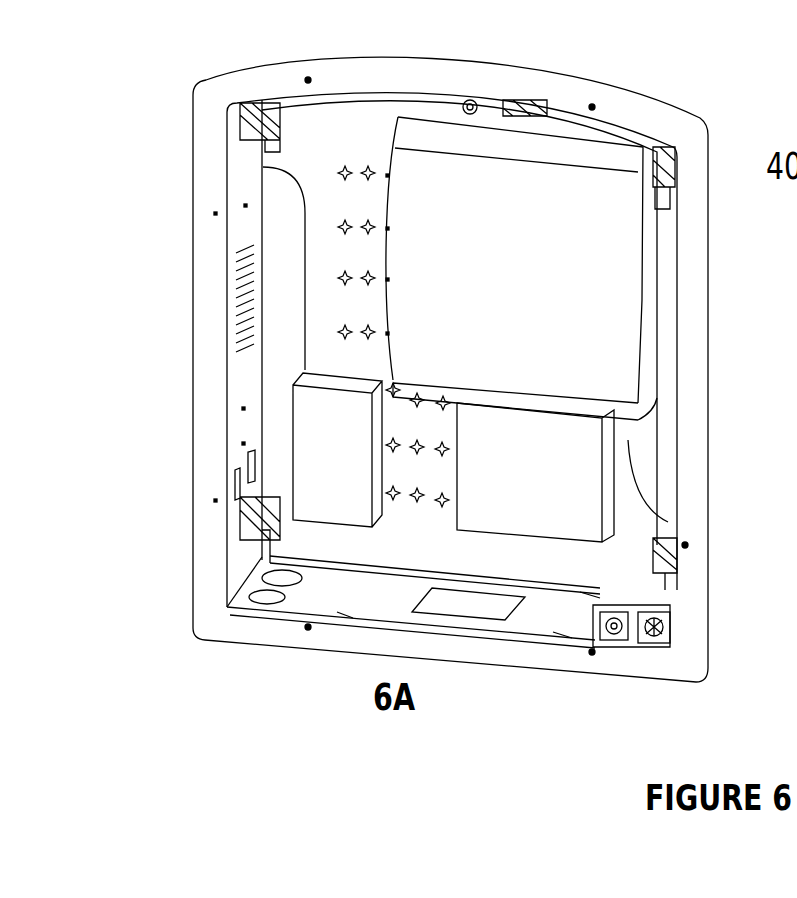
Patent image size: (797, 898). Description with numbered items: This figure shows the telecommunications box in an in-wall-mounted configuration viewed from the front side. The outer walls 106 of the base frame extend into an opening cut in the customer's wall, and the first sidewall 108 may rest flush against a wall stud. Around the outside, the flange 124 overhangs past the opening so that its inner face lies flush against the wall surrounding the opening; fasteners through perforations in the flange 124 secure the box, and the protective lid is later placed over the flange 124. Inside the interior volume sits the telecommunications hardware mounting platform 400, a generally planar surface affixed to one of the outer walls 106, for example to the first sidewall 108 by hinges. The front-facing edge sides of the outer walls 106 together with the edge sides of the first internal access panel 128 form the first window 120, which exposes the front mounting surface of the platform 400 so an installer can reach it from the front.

The outer walls 106 is at (235, 290).
The first sidewall 108 is at (237, 433).
The first window 120 is at (302, 363).
The flange 124 is at (235, 622).
The first internal access panel 128 is at (670, 613).
The telecommunications hardware mounting platform 400 is at (320, 258).